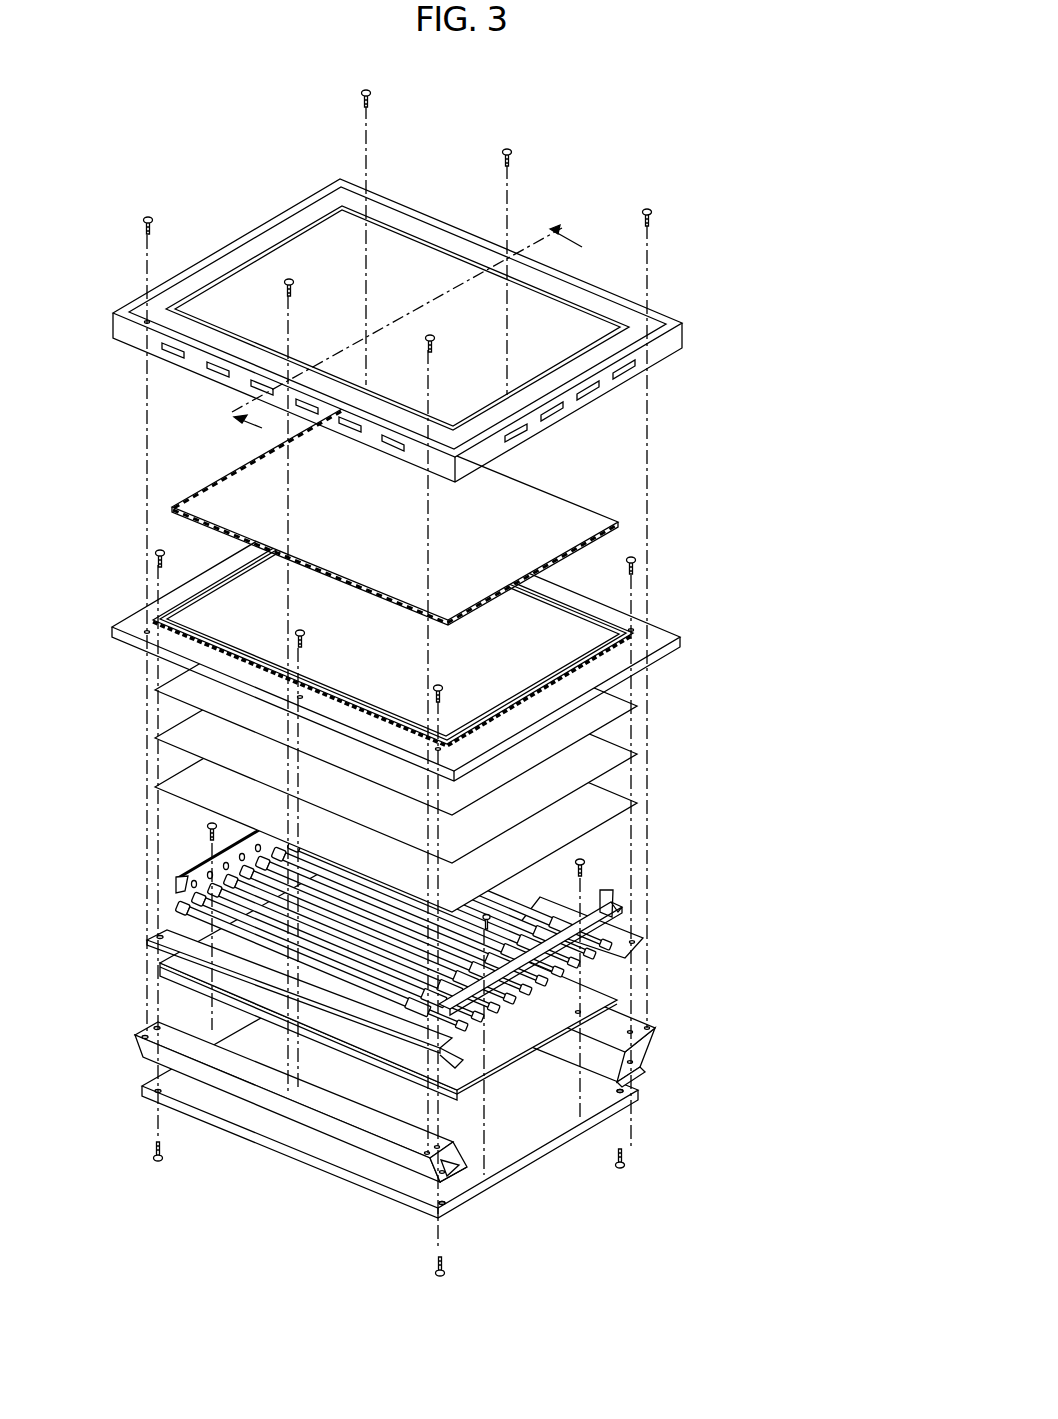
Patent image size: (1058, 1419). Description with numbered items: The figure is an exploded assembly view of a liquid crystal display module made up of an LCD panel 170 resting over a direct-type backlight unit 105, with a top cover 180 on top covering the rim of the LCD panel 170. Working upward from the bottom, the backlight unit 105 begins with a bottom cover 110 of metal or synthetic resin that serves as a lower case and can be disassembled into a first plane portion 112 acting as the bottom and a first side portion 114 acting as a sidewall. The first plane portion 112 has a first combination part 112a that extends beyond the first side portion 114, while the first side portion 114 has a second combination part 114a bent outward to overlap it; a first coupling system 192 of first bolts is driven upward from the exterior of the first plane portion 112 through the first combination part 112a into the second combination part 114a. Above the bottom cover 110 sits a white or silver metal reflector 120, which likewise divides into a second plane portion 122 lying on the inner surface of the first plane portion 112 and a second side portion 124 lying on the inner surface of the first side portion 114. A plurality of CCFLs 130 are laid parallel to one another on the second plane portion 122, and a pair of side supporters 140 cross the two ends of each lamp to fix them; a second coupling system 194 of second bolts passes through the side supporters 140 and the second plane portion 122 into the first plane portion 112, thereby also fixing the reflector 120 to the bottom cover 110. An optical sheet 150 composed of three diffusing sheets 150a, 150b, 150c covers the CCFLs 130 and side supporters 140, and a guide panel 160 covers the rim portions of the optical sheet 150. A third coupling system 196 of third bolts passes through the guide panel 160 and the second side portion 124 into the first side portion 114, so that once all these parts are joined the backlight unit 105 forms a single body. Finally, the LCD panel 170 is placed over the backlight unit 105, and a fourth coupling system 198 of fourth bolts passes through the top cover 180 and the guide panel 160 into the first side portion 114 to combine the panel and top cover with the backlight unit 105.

The backlight unit 105 is at (777, 648).
The bottom cover 110 is at (598, 1182).
The first plane portion 112 is at (500, 1201).
The first combination part 112a is at (447, 1210).
The first side portion 114 is at (582, 1066).
The second combination part 114a is at (413, 1177).
The reflector 120 is at (711, 967).
The second plane portion 122 is at (617, 1013).
The second side portion 124 is at (588, 979).
The CCFLs 130 is at (643, 940).
The side supporters 140 is at (178, 883).
The optical sheet 150 is at (728, 735).
The diffusing sheet 150a is at (638, 708).
The diffusing sheet 150b is at (636, 756).
The diffusing sheet 150c is at (636, 806).
The guide panel 160 is at (685, 640).
The LCD panel 170 is at (620, 518).
The top cover 180 is at (690, 333).
The first coupling system 192 is at (152, 1152).
The second coupling system 194 is at (206, 828).
The third coupling system 196 is at (155, 553).
The fourth coupling system 198 is at (372, 100).